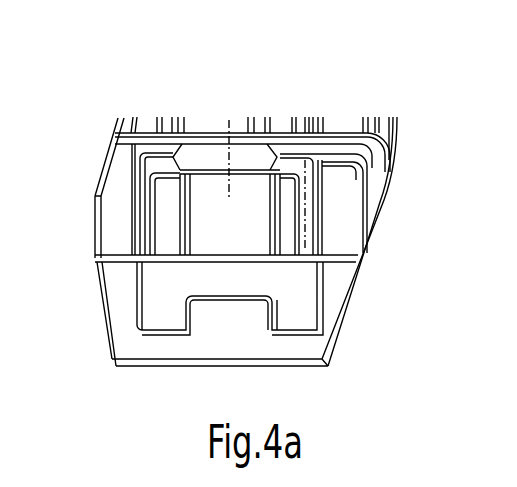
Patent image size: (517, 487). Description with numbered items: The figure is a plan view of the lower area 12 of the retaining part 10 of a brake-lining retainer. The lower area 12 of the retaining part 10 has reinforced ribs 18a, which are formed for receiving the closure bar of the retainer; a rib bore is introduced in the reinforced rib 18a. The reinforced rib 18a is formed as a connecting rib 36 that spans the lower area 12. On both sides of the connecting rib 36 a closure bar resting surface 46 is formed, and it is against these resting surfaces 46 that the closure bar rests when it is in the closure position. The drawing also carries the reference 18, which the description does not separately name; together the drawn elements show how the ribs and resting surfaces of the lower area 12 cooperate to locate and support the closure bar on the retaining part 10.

The retaining part 10 is at (393, 181).
The lower area 12 is at (351, 348).
The frame 18 is at (248, 133).
The reinforced rib 18a is at (147, 297).
The connecting rib 36 is at (168, 312).
The closure bar resting surface 46 is at (108, 273).